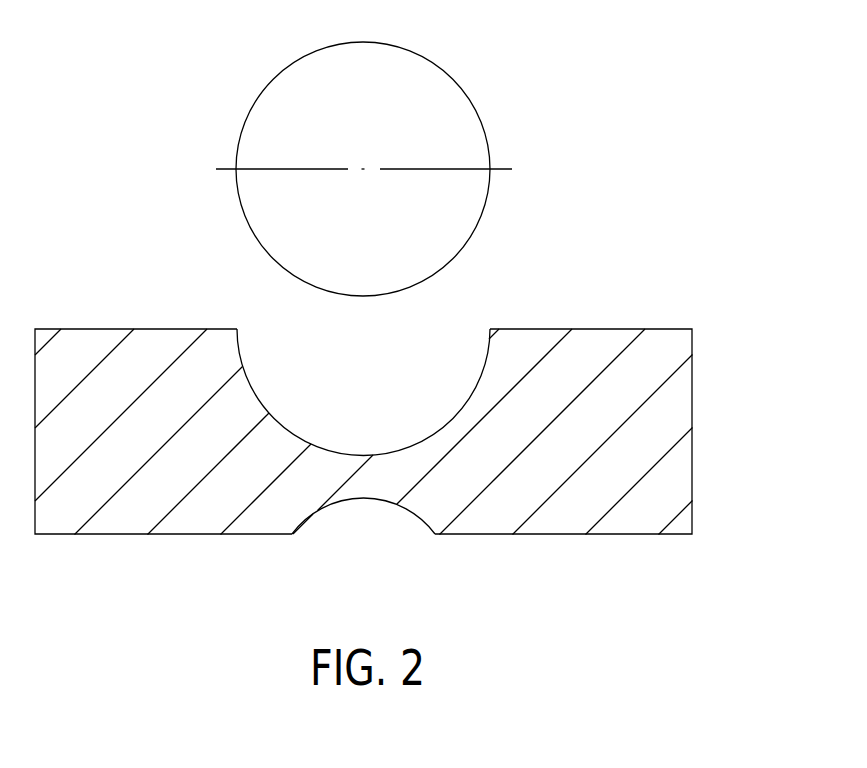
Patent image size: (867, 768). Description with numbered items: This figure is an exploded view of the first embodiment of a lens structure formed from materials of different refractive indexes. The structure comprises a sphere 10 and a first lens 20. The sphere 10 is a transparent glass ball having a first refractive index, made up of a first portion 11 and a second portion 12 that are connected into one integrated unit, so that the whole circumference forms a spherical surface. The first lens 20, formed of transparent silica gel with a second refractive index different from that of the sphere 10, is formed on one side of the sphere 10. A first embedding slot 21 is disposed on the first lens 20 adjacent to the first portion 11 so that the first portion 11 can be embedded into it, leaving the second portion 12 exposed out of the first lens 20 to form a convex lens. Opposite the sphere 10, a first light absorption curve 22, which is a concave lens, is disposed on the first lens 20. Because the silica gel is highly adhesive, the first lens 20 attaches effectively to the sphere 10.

The sphere 10 is at (262, 132).
The first portion 11 is at (461, 250).
The second portion 12 is at (467, 97).
The first lens 20 is at (677, 362).
The first embedding slot 21 is at (278, 362).
The first light absorption curve 22 is at (398, 502).